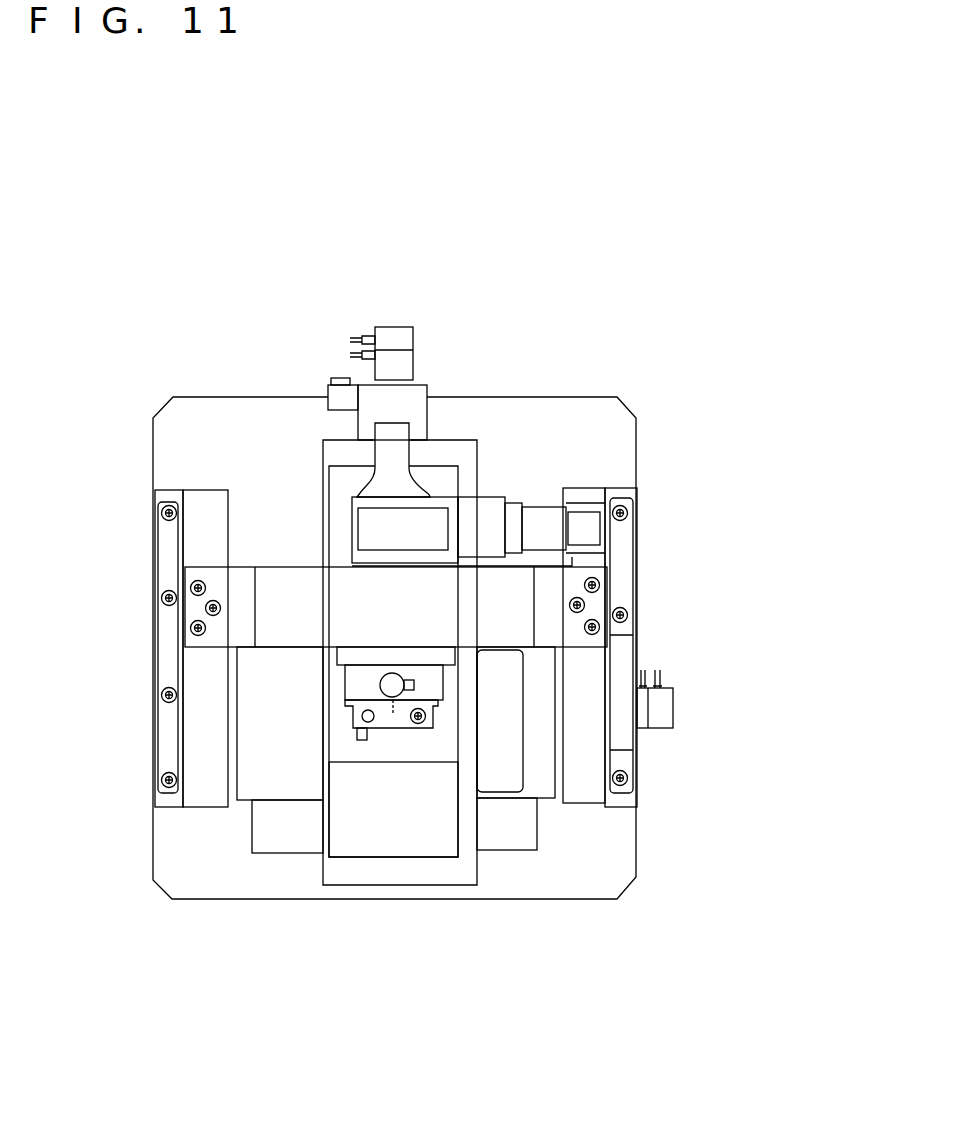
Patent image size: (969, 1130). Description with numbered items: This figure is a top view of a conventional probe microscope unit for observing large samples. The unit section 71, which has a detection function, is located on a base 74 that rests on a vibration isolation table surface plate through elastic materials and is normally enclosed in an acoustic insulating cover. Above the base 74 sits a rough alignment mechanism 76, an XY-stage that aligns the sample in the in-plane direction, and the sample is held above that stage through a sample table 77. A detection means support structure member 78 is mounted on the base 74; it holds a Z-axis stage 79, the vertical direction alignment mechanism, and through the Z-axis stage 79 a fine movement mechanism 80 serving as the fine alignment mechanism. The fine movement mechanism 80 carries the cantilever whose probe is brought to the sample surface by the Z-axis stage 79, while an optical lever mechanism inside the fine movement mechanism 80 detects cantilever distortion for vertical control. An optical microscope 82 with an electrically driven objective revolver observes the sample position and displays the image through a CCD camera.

The unit section 71 is at (357, 217).
The base 74 is at (540, 881).
The rough alignment mechanism 76 is at (370, 842).
The sample table 77 is at (340, 720).
The detection means support structure member 78 is at (197, 603).
The Z-axis stage 79 is at (400, 672).
The fine movement mechanism 80 is at (393, 715).
The optical microscope 82 is at (395, 472).